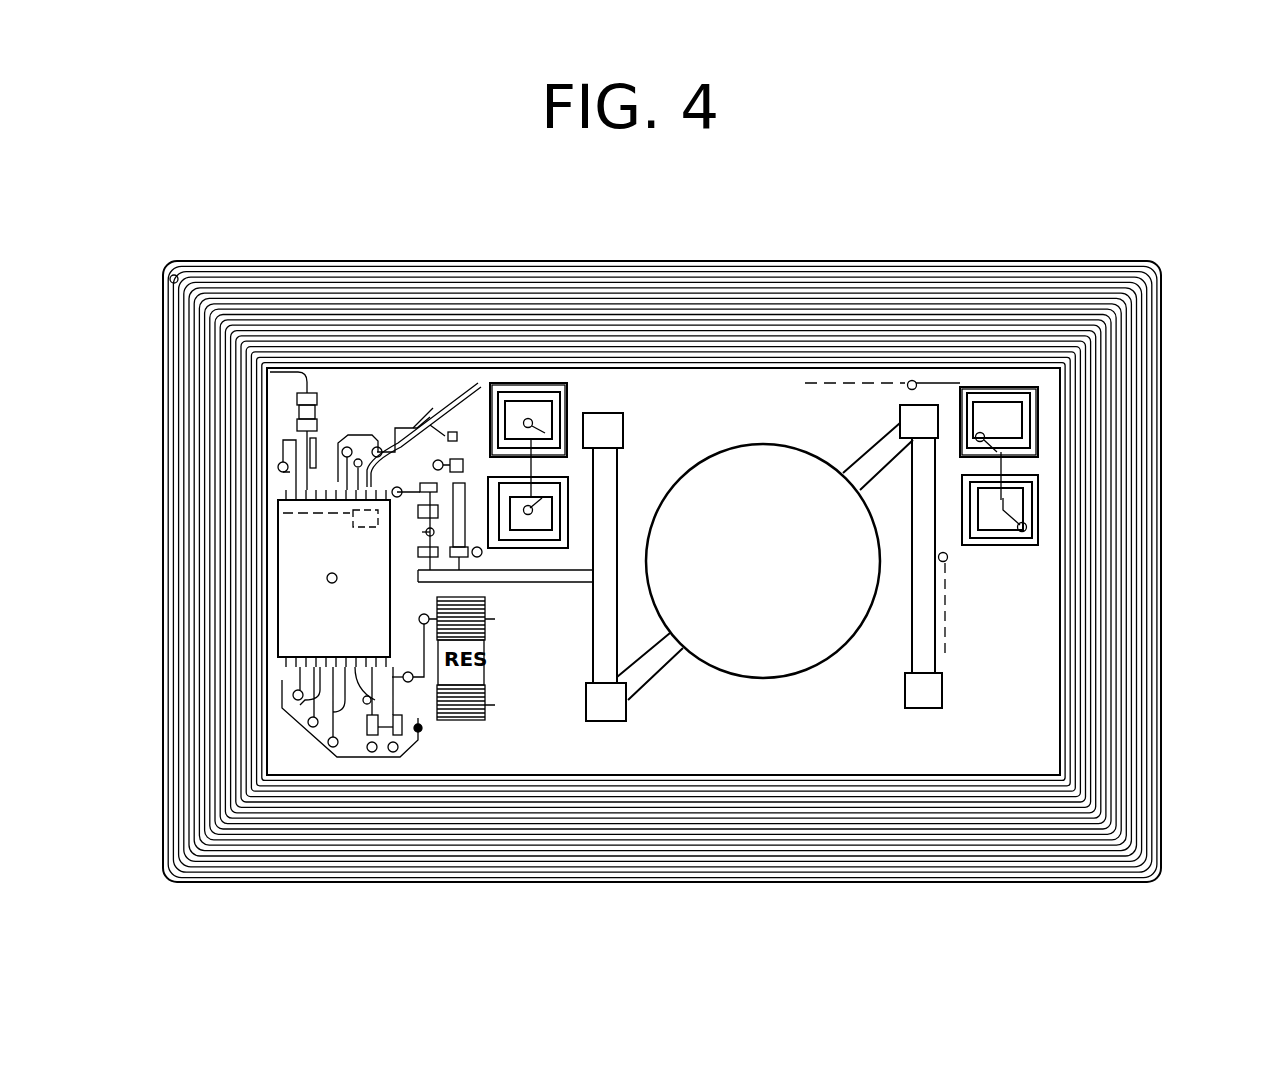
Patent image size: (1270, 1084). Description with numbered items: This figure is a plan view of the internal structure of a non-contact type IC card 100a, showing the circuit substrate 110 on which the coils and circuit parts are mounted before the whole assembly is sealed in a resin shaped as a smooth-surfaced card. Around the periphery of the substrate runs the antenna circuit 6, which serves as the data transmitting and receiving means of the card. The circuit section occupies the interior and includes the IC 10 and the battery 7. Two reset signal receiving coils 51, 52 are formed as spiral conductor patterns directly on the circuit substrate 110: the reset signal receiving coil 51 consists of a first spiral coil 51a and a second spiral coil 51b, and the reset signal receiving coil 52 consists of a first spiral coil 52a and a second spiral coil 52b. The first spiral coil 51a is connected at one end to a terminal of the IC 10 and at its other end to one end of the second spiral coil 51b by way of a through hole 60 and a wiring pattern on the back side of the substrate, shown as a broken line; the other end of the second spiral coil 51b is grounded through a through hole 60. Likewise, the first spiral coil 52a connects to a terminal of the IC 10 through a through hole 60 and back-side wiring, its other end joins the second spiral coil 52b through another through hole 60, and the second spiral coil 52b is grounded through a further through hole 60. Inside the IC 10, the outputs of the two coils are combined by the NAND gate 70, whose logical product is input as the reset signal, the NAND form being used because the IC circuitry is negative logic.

The non-contact type IC card 100a is at (1157, 262).
The circuit substrate 110 is at (1078, 262).
The antenna circuit 6 is at (848, 293).
The IC 10 is at (267, 553).
The NAND gate 70 is at (277, 517).
The battery 7 is at (792, 633).
The reset signal receiving coil 51 is at (524, 383).
The first spiral coil 51a is at (537, 383).
The second spiral coil 51b is at (577, 477).
The reset signal receiving coil 52 is at (970, 387).
The first spiral coil 52a is at (1002, 387).
The second spiral coil 52b is at (1040, 488).
The through hole 60 is at (528, 419).